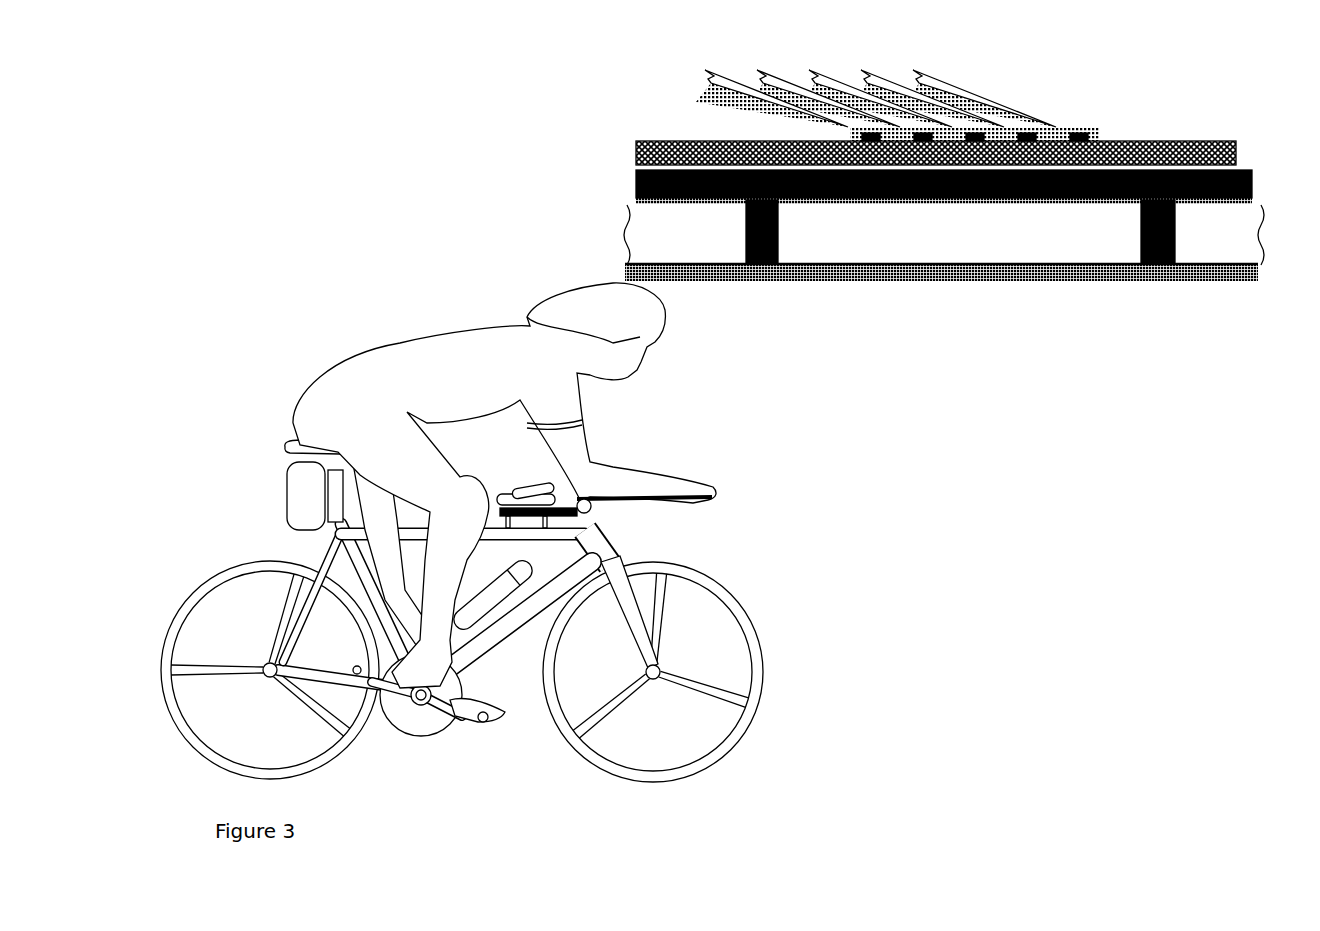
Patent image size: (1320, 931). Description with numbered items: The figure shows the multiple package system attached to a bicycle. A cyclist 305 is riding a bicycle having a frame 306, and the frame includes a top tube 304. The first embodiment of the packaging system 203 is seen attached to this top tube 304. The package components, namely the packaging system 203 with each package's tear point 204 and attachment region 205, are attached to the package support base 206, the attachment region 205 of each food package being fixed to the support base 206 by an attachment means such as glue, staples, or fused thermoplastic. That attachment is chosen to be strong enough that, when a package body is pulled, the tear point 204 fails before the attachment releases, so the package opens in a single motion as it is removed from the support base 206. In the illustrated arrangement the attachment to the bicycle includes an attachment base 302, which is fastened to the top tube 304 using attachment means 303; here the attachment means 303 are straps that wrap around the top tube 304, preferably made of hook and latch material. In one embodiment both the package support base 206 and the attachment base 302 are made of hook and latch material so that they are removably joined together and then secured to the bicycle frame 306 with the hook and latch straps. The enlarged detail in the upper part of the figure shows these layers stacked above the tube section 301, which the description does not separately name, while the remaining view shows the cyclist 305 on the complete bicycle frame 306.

The packaging system 203 is at (1013, 82).
The tear point 204 is at (1060, 118).
The attachment region 205 is at (1103, 113).
The package support base 206 is at (624, 153).
The base substrate 301 is at (902, 457).
The attachment base 302 is at (624, 182).
The attachment means 303 is at (785, 280).
The top tube 304 is at (587, 520).
The cyclist 305 is at (400, 331).
The frame 306 is at (557, 602).